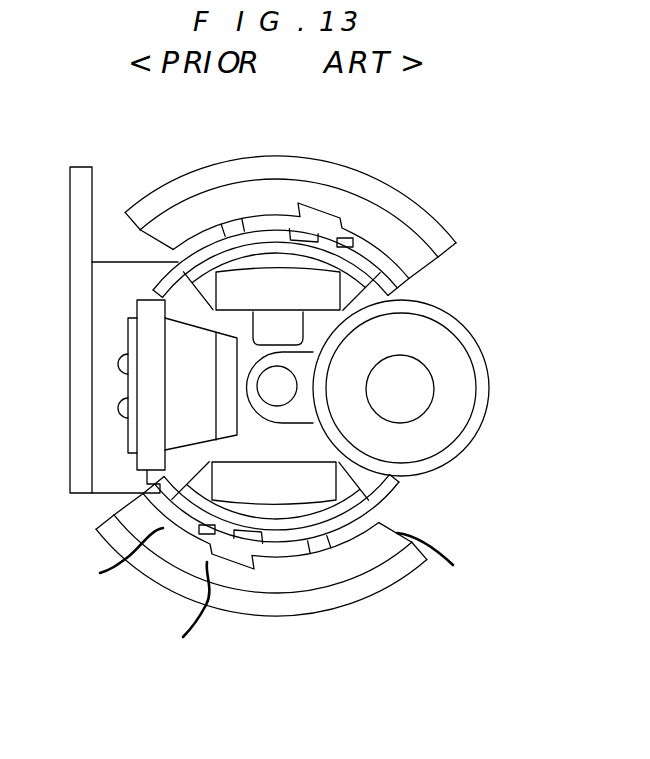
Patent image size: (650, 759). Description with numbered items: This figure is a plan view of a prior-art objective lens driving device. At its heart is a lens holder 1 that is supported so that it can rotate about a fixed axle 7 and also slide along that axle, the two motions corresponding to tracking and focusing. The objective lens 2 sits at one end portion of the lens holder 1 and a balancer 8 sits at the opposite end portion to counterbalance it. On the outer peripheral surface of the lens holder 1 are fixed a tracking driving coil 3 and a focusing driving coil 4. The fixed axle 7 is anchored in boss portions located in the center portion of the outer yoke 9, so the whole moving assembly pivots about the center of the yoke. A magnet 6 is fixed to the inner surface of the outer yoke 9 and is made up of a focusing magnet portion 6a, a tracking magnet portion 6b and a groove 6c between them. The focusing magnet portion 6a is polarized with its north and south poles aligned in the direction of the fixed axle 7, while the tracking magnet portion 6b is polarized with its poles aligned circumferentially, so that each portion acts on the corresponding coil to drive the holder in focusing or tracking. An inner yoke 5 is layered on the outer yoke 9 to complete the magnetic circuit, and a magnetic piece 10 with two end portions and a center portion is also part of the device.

The lens holder 1 is at (487, 388).
The objective lens 2 is at (450, 432).
The tracking driving coil 3 is at (382, 267).
The focusing driving coil 4 is at (213, 226).
The inner yoke 5 is at (342, 277).
The magnet 6 is at (322, 195).
The focusing magnet portion 6a is at (438, 566).
The tracking magnet portion 6b is at (125, 571).
The groove 6c is at (184, 621).
The fixed axle 7 is at (305, 388).
The balancer 8 is at (148, 392).
The outer yoke 9 is at (285, 163).
The magnetic piece 10 is at (262, 210).